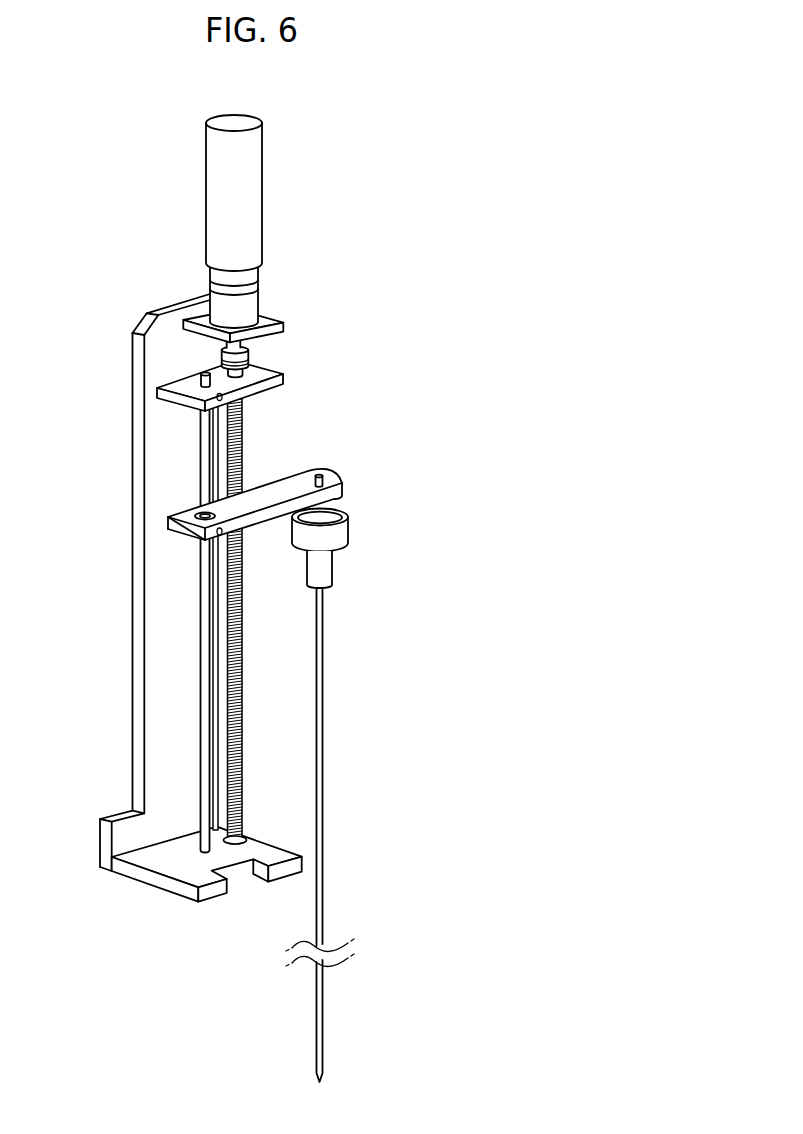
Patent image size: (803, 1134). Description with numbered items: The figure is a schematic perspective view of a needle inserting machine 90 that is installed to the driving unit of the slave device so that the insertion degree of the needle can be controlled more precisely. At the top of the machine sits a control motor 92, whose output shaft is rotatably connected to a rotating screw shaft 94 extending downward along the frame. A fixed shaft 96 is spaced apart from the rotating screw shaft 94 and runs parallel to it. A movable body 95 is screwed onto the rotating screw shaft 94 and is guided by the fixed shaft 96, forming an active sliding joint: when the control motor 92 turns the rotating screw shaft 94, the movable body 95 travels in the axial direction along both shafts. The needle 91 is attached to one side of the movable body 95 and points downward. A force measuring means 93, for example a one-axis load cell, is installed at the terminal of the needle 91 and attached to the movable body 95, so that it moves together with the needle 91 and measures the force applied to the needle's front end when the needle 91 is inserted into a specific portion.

The needle inserting machine 90 is at (124, 393).
The needle 91 is at (323, 695).
The control motor 92 is at (263, 179).
The force measuring means 93 is at (350, 525).
The rotating screw shaft 94 is at (237, 423).
The movable body 95 is at (302, 478).
The fixed shaft 96 is at (200, 697).